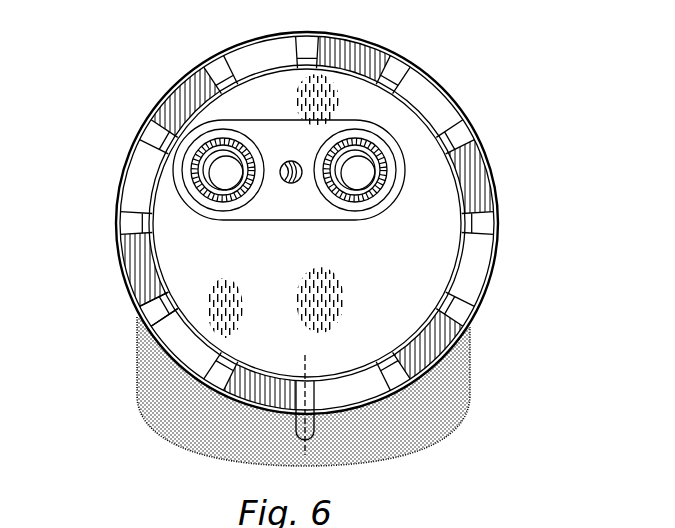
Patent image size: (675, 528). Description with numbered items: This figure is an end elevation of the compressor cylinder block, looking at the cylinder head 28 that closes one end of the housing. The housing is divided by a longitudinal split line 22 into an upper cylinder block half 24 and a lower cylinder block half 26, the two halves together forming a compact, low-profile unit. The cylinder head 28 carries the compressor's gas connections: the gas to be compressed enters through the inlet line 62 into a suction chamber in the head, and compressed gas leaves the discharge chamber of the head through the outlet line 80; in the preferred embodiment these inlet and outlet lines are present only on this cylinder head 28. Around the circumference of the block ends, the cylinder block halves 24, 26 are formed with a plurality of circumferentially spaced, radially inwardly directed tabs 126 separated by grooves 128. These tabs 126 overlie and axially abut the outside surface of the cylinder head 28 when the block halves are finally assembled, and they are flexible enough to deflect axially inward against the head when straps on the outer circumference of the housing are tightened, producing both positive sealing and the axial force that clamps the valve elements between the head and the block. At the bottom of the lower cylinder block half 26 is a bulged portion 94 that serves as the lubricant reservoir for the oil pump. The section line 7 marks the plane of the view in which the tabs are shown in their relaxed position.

The split line 22 is at (133, 197).
The upper cylinder block half 24 is at (320, 33).
The lower cylinder block half 26 is at (468, 360).
The cylinder head 28 is at (440, 253).
The inlet line 62 is at (366, 193).
The outlet line 80 is at (242, 193).
The bulged portion 94 is at (343, 465).
The tabs 126 is at (427, 95).
The grooves 128 is at (158, 310).
The section line 7- 7 is at (280, 448).